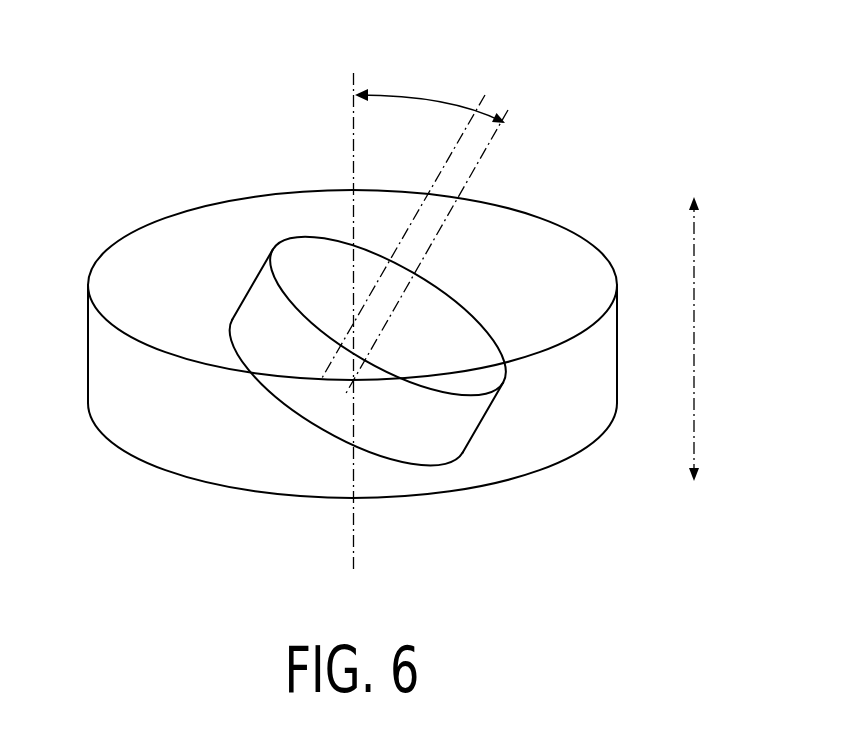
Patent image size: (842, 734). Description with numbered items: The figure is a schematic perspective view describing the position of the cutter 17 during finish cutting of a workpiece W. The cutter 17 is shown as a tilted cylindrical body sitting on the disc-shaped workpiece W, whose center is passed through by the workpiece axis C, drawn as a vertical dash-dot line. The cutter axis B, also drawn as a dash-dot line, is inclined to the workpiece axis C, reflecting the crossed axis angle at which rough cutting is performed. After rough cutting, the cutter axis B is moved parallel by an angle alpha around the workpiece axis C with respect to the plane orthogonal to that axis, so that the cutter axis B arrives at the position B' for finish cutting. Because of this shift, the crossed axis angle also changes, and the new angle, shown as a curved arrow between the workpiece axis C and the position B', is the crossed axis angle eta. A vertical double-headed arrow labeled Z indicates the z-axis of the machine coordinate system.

The cutter 17 is at (253, 285).
The workpiece W is at (118, 372).
The workpiece axis C is at (355, 307).
The cutter axis B is at (410, 221).
The cutter axis position during finish cutting B' is at (442, 233).
The z-axis Z is at (694, 323).